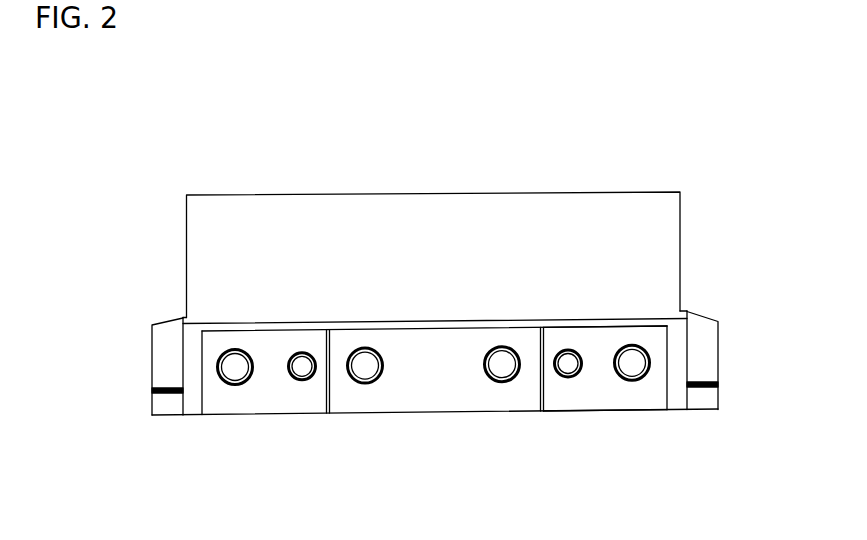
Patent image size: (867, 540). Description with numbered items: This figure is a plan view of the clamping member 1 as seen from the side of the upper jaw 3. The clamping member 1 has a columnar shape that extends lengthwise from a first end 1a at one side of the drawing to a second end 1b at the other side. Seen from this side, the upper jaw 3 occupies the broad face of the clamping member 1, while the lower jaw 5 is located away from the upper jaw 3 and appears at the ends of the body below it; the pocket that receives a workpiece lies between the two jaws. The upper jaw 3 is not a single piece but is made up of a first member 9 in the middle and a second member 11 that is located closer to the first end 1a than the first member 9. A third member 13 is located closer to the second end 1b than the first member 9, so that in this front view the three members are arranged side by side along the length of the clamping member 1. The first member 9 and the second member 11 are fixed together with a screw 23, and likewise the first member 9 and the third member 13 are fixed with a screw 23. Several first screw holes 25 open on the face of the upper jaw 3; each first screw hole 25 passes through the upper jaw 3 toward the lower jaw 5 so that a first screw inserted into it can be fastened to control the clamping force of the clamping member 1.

The clamping member 1 is at (181, 164).
The first end 1a is at (718, 355).
The second end 1b is at (150, 373).
The upper jaw 3 is at (444, 431).
The first member 9 is at (433, 377).
The second member 11 is at (603, 390).
The third member 13 is at (265, 395).
The lower jaw 5 is at (702, 398).
The screw 23 is at (302, 368).
The first screw hole 25 is at (232, 372).